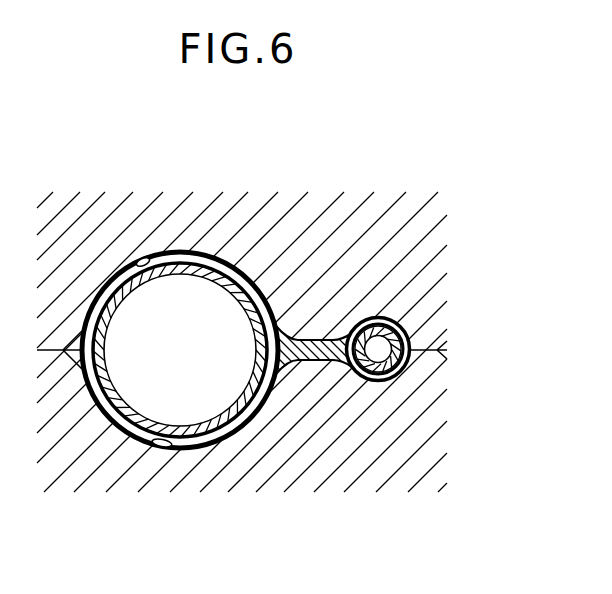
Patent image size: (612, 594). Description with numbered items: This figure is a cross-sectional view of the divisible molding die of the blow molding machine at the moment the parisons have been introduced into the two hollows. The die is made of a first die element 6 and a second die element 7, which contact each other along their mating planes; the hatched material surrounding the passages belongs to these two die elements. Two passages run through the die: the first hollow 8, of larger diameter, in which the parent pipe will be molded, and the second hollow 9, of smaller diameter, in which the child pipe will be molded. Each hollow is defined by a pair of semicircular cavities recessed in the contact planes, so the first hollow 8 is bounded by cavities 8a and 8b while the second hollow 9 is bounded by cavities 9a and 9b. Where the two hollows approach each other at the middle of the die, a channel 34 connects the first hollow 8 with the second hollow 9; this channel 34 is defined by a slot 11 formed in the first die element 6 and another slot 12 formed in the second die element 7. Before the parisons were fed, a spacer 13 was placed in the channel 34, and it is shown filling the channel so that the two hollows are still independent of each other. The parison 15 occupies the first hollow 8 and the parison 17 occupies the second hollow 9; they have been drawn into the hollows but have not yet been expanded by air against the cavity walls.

The first die element 6 is at (242, 215).
The second die element 7 is at (98, 462).
The first hollow 8 is at (90, 292).
The cavity 8a is at (146, 262).
The cavity 8b is at (178, 448).
The parison 15 is at (180, 270).
The slot 11 is at (300, 338).
The channel 34 is at (328, 340).
The cavity 9a is at (377, 317).
The parison 17 is at (407, 316).
The spacer 13 is at (280, 374).
The slot 12 is at (318, 361).
The cavity 9b is at (372, 382).
The second hollow 9 is at (404, 376).